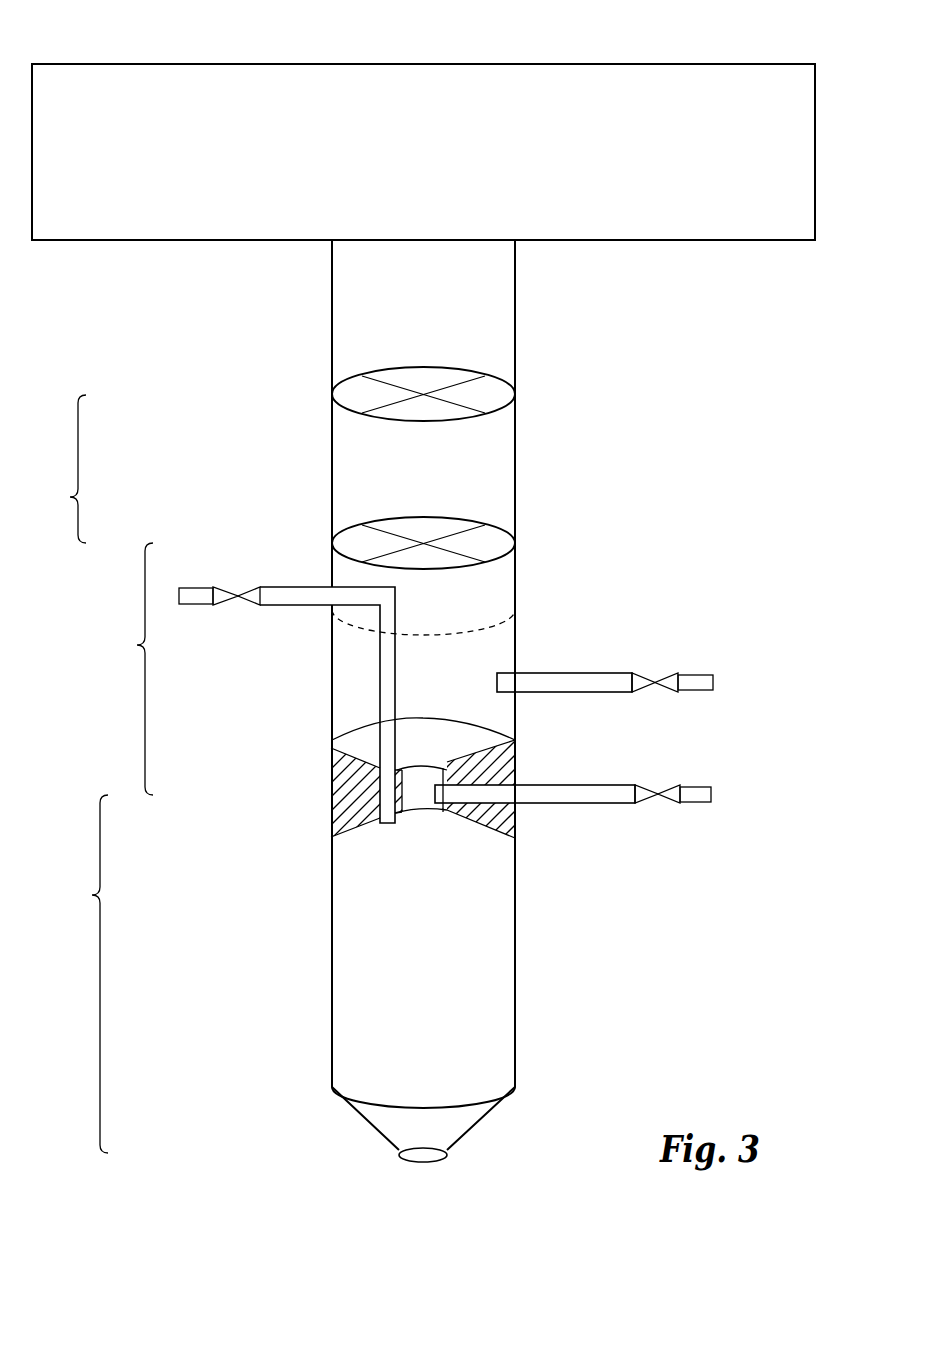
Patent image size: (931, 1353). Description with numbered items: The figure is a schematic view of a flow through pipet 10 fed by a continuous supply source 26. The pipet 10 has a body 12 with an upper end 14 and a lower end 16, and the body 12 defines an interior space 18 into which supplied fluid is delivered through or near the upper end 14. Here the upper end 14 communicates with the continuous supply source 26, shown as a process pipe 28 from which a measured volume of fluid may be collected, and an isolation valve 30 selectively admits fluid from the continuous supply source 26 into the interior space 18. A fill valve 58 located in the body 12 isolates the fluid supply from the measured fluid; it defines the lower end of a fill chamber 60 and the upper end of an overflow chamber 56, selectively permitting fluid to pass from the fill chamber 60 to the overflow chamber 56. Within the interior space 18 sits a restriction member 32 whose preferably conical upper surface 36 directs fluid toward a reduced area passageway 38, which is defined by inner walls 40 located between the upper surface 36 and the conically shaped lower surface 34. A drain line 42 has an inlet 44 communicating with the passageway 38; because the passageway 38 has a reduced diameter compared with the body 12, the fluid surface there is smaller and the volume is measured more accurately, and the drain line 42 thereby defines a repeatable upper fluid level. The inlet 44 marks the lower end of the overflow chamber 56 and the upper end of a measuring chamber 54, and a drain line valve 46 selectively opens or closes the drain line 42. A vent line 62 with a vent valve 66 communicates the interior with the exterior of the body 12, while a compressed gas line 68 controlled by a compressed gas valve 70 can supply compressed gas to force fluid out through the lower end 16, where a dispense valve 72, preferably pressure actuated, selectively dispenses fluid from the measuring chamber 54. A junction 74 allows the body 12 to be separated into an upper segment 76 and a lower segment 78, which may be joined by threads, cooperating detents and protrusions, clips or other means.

The flow through pipet 10 is at (590, 425).
The body 12 is at (517, 976).
The upper end 14 is at (326, 234).
The lower end 16 is at (358, 1138).
The interior space 18 is at (452, 928).
The continuous supply source 26 is at (169, 61).
The process pipe 28 is at (412, 178).
The isolation valve 30 is at (463, 382).
The restriction member 32 is at (348, 796).
The lower surface 34 is at (356, 833).
The upper surface 36 is at (362, 752).
The reduced area passageway 38 is at (470, 722).
The inner walls 40 is at (427, 763).
The drain line 42 is at (712, 797).
The inlet 44 is at (435, 798).
The drain line valve 46 is at (656, 804).
The measuring chamber 54 is at (78, 974).
The overflow chamber 56 is at (122, 669).
The fill valve 58 is at (447, 515).
The fill chamber 60 is at (57, 469).
The vent line 62 is at (297, 592).
The vent valve 66 is at (246, 606).
The compressed gas line 68 is at (584, 680).
The compressed gas valve 70 is at (658, 678).
The dispense valve 72 is at (421, 1162).
The junction 74 is at (470, 627).
The upper segment 76 is at (522, 445).
The lower segment 78 is at (525, 1020).